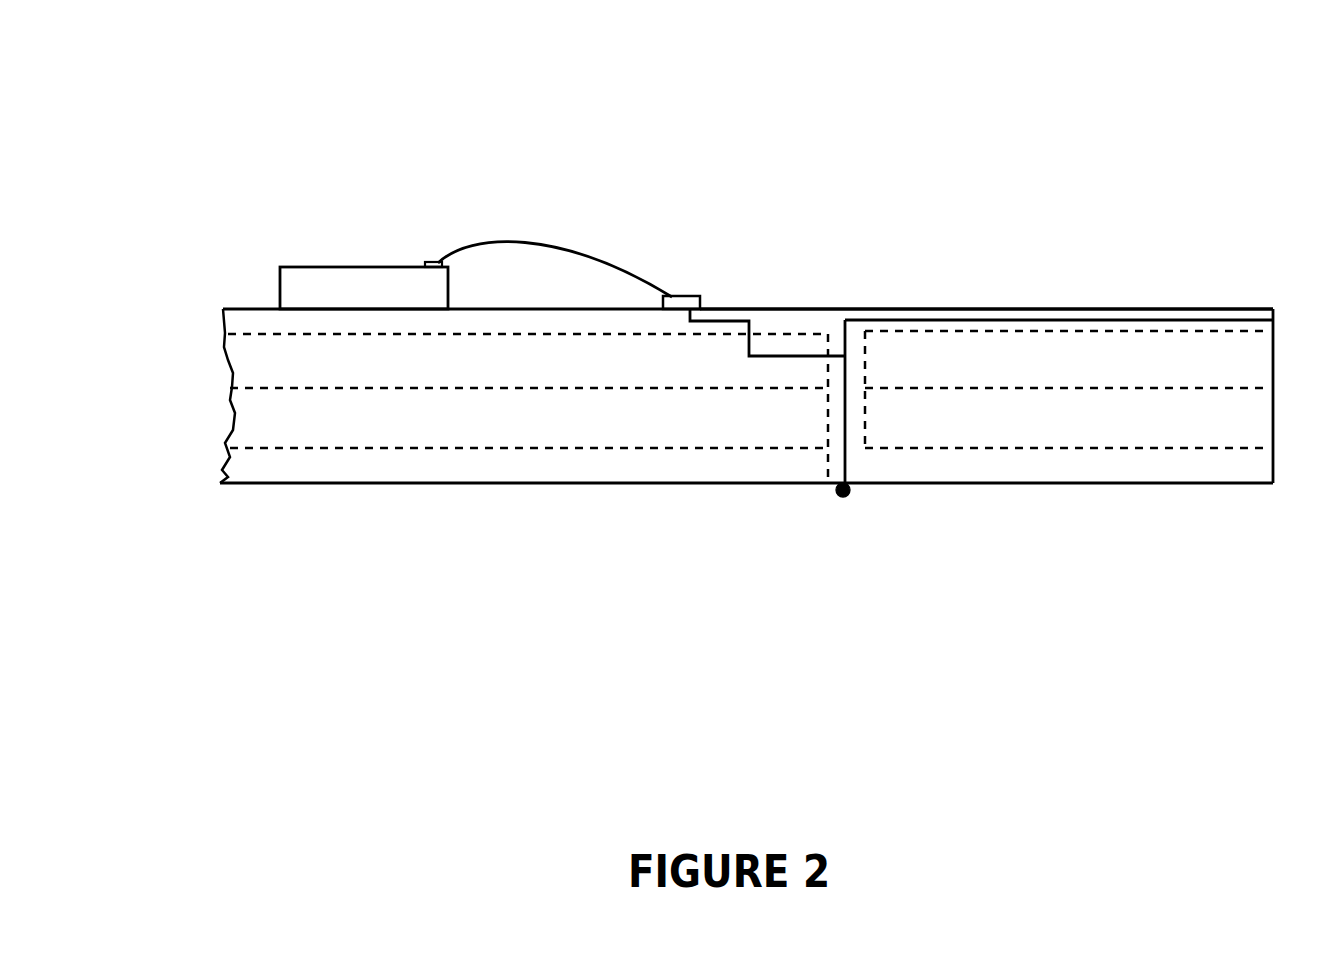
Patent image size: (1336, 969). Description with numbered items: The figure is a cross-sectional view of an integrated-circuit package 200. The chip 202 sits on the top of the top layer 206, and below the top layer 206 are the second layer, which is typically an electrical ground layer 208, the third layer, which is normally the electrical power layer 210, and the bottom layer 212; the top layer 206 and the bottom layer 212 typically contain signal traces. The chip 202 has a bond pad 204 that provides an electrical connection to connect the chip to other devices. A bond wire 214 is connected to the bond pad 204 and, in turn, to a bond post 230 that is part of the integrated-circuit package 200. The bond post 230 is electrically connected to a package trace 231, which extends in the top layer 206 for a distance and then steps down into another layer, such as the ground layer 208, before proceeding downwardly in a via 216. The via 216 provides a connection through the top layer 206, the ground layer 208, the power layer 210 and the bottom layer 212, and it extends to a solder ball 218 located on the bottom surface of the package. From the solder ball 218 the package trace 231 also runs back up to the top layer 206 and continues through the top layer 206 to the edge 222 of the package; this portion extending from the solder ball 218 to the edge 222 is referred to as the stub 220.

The integrated-circuit package 200 is at (200, 502).
The chip 202 is at (357, 267).
The bond pad 204 is at (427, 262).
The top layer 206 is at (943, 309).
The ground layer 208 is at (306, 354).
The power layer 210 is at (605, 418).
The bottom layer 212 is at (750, 463).
The bond wire 214 is at (488, 243).
The via 216 is at (867, 362).
The solder ball 218 is at (850, 493).
The stub 220 is at (1127, 318).
The edge 222 is at (1280, 313).
The bond post 230 is at (688, 295).
The package trace 231 is at (773, 355).